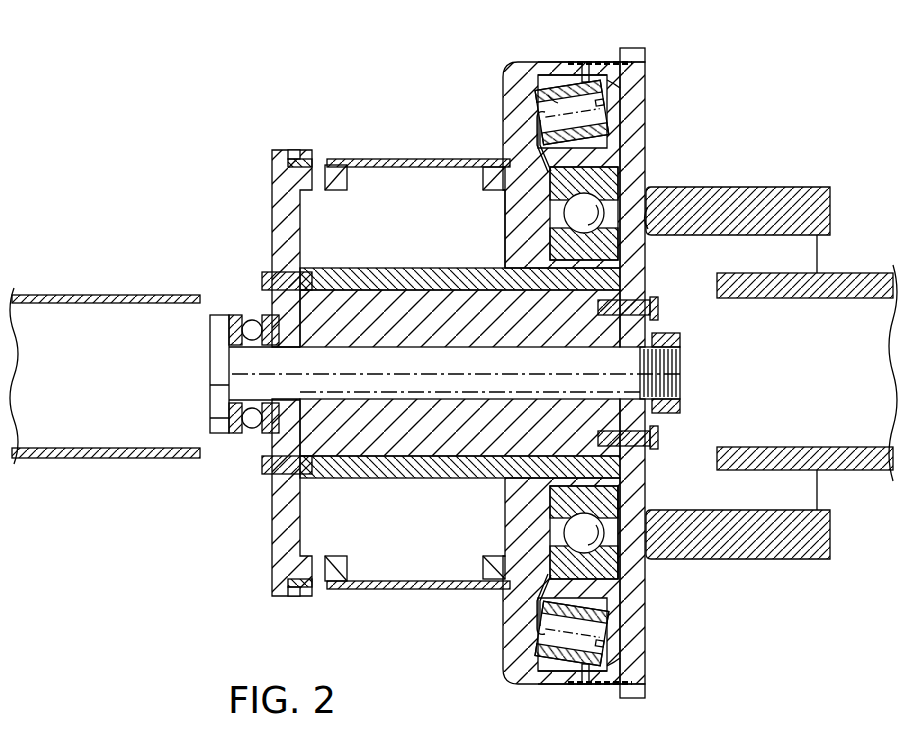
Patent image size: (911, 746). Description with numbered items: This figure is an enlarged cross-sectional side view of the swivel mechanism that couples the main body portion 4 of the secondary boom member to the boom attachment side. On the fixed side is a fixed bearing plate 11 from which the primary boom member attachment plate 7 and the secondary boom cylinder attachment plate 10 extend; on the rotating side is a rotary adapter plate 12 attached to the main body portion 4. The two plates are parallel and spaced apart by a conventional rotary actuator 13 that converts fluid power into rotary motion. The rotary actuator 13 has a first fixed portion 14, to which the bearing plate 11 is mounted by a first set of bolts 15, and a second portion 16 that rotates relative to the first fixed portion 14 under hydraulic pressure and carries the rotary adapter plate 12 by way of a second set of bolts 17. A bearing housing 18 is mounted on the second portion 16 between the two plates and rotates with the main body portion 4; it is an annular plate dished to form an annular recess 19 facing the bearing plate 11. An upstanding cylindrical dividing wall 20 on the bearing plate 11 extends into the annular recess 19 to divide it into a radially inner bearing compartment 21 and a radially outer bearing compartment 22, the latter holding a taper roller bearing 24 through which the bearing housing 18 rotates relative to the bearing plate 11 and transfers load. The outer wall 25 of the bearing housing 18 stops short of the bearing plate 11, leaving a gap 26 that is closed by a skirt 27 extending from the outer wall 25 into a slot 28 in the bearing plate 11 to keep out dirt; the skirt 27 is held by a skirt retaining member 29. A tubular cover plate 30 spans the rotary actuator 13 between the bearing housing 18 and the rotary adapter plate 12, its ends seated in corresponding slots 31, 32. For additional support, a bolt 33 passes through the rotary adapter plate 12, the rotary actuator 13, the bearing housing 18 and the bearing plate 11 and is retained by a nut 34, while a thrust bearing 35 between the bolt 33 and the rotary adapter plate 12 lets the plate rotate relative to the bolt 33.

The main body portion 4 is at (58, 293).
The primary boom member attachment plate 7 is at (795, 187).
The secondary boom cylinder attachment plate 10 is at (868, 273).
The fixed bearing plate 11 is at (650, 222).
The rotary adapter plate 12 is at (274, 520).
The rotary actuator 13 is at (457, 372).
The first fixed portion 14 is at (538, 330).
The first set of bolts 15 is at (658, 308).
The second portion 16 is at (410, 268).
The second set of bolts 17 is at (262, 280).
The bearing housing 18 is at (510, 92).
The annular recess 19 is at (520, 120).
The cylindrical dividing wall 20 is at (612, 172).
The radially inner bearing compartment 21 is at (620, 497).
The radially outer bearing compartment 22 is at (605, 100).
The taper roller bearing 24 is at (544, 93).
The outer wall 25 is at (556, 65).
The gap 26 is at (625, 88).
The skirt 27 is at (612, 58).
The slot 28 is at (645, 60).
The skirt retaining member 29 is at (585, 60).
The tubular cover plate 30 is at (365, 159).
The slot 31 is at (536, 140).
The slot 32 is at (292, 150).
The bolt 33 is at (210, 373).
The nut 34 is at (684, 340).
The thrust bearing 35 is at (229, 418).